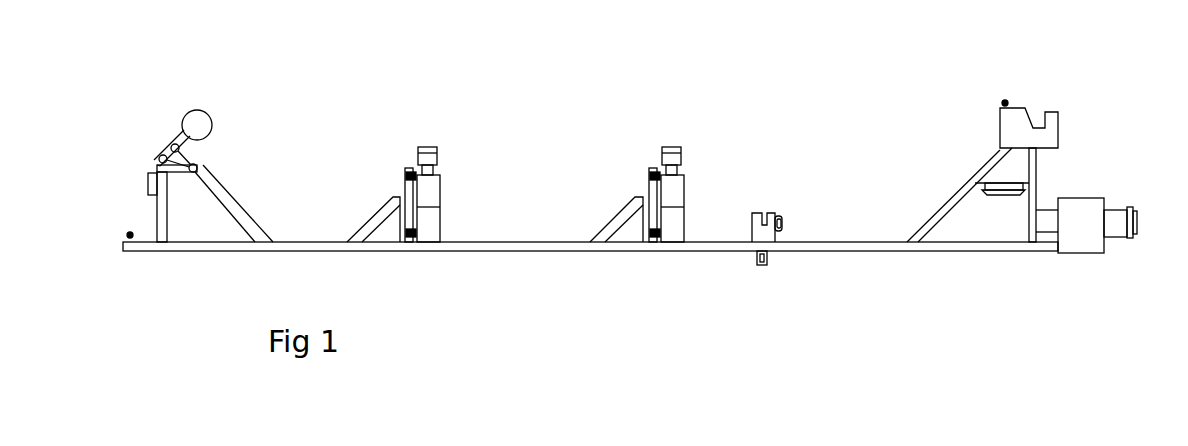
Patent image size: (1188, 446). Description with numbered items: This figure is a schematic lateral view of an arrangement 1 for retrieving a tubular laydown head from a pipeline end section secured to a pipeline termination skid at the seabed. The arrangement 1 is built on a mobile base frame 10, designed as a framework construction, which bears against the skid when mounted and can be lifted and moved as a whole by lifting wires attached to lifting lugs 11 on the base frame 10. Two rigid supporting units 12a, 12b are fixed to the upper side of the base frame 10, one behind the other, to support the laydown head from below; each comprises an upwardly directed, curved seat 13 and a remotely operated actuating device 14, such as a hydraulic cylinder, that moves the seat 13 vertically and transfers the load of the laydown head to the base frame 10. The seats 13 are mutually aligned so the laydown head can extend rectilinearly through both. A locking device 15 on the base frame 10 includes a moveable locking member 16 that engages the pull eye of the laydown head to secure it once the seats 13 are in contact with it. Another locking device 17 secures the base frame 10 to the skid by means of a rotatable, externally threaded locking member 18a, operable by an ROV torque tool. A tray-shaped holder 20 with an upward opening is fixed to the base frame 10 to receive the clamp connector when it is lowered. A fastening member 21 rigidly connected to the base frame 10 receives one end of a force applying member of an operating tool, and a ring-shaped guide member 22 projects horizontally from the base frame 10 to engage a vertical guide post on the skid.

The arrangement 1 is at (791, 102).
The base frame 10 is at (530, 251).
The lifting lugs 11 is at (127, 234).
The supporting unit 12a is at (652, 153).
The supporting unit 12b is at (409, 152).
The seat 13 is at (437, 153).
The actuating device 14 is at (440, 196).
The locking device 15 is at (166, 131).
The locking member 16 is at (198, 118).
The locking device 17 is at (779, 197).
The locking member 18a is at (761, 266).
The holder 20 is at (1082, 243).
The fastening member 21 is at (1060, 118).
The guide member 22 is at (1003, 196).